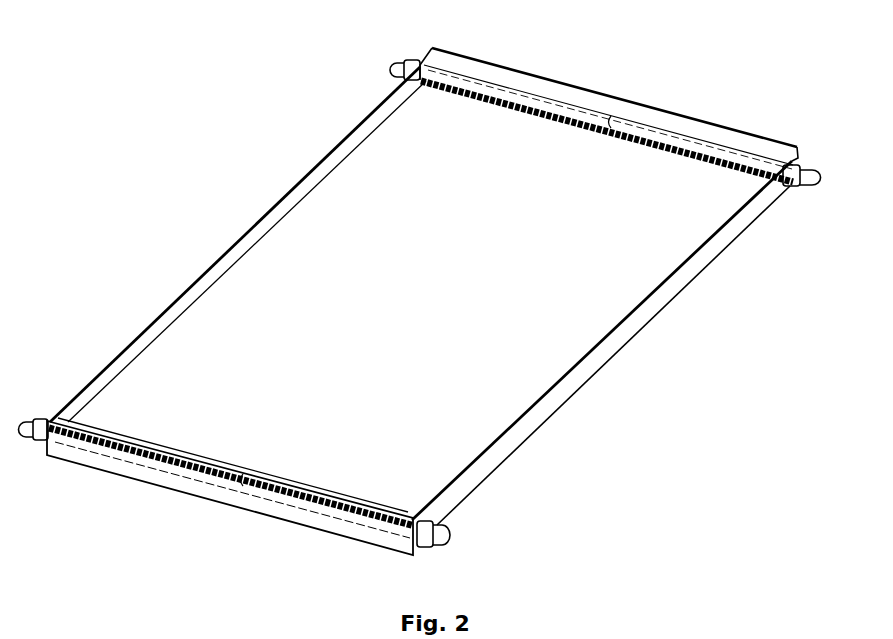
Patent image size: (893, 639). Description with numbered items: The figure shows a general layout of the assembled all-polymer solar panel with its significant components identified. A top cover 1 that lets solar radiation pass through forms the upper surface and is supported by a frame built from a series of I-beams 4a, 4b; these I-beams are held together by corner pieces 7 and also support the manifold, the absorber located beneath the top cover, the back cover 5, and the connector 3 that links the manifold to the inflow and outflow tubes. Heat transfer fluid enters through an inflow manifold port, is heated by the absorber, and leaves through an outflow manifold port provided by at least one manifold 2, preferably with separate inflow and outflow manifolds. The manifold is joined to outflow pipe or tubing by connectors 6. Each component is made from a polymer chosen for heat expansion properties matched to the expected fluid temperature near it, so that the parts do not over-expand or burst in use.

The top cover 1 is at (260, 333).
The manifold 2 is at (650, 140).
The connector 3 is at (340, 237).
The I-beam 4a is at (648, 328).
The I-beam 4b is at (200, 470).
The back cover 5 is at (482, 492).
The connector 6 is at (797, 190).
The corner piece 7 is at (440, 47).